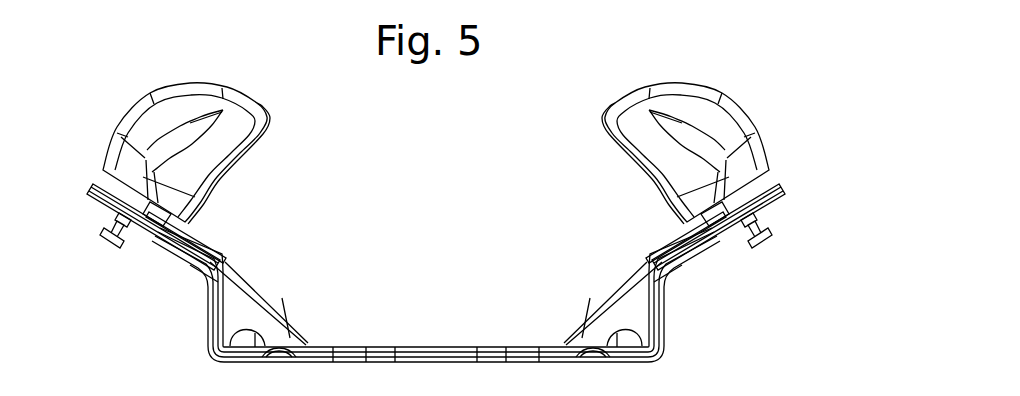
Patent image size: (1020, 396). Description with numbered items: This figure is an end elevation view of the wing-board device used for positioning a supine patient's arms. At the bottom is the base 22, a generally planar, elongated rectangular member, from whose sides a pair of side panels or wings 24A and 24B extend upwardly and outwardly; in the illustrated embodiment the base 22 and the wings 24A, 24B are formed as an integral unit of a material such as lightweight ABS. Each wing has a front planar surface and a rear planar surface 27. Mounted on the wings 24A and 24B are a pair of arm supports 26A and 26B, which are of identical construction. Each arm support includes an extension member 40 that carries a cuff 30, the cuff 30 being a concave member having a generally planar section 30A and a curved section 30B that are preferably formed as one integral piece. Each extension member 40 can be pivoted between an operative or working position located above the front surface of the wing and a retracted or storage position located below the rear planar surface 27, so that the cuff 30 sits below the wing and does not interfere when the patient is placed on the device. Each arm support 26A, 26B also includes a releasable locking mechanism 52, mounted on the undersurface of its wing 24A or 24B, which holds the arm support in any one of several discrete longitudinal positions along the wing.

The base 22 is at (422, 345).
The wing 24A is at (233, 317).
The wing 24B is at (632, 318).
The arm support 26A is at (720, 127).
The arm support 26B is at (158, 122).
The rear planar surface 27 is at (175, 262).
The cuff 30 is at (232, 127).
The generally planar section 30A is at (205, 243).
The curved section 30B is at (227, 168).
The extension member 40 is at (118, 177).
The releasable locking mechanism 52 is at (113, 257).